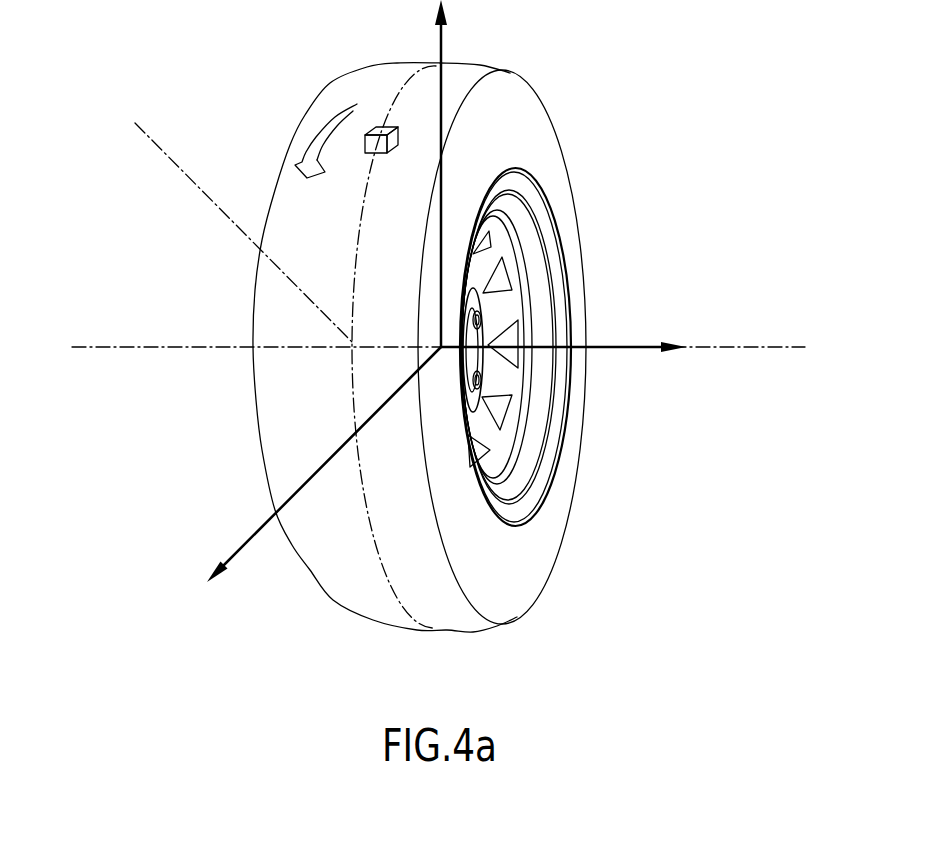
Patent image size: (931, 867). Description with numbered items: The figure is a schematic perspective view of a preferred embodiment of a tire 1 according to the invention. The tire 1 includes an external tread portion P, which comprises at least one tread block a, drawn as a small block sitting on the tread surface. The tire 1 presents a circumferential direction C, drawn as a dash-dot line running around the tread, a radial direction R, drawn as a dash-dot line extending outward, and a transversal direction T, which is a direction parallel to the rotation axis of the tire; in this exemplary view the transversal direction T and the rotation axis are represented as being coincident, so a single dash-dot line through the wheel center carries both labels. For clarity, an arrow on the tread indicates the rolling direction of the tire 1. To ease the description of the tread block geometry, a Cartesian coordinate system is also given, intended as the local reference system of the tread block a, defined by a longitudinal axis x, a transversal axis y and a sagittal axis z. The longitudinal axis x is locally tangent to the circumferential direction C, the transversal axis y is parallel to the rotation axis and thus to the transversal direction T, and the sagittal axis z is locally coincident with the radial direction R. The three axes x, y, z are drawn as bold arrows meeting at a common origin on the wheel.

The tire 1 is at (683, 58).
The tread block a is at (378, 143).
The external tread portion P is at (288, 71).
The radial direction R is at (243, 220).
The circumferential direction C is at (380, 347).
The transversal direction T is at (438, 329).
The longitudinal axis x is at (318, 464).
The transversal axis y is at (563, 329).
The sagittal axis z is at (451, 173).